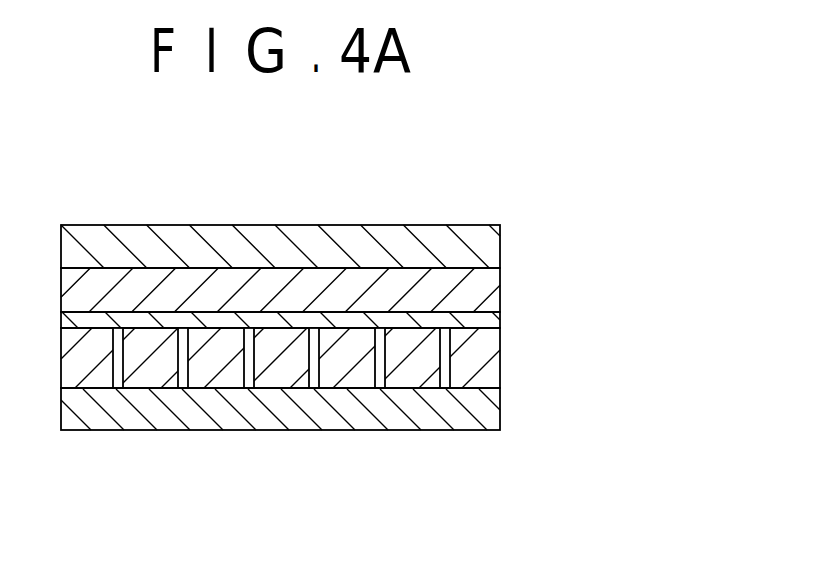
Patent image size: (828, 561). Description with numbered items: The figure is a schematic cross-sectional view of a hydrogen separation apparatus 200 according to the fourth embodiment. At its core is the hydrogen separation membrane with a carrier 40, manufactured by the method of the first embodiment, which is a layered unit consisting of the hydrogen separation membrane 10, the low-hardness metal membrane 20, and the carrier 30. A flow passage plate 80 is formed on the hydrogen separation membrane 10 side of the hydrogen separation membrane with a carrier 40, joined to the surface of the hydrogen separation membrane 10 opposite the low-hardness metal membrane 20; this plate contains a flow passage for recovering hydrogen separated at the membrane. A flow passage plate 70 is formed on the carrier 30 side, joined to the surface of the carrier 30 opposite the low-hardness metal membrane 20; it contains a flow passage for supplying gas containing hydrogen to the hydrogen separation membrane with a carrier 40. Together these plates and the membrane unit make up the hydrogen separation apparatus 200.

The hydrogen separation apparatus 200 is at (589, 226).
The flow passage plate 80 is at (501, 243).
The hydrogen separation membrane 10 is at (501, 279).
The low-hardness metal membrane 20 is at (501, 320).
The carrier 30 is at (501, 367).
The hydrogen separation membrane with a carrier 40 is at (565, 237).
The flow passage plate 70 is at (501, 410).